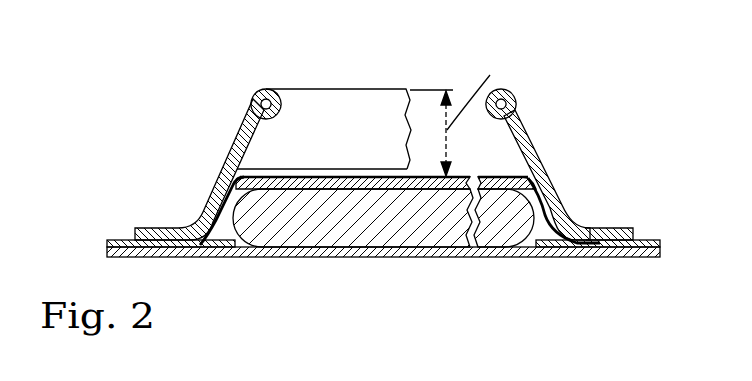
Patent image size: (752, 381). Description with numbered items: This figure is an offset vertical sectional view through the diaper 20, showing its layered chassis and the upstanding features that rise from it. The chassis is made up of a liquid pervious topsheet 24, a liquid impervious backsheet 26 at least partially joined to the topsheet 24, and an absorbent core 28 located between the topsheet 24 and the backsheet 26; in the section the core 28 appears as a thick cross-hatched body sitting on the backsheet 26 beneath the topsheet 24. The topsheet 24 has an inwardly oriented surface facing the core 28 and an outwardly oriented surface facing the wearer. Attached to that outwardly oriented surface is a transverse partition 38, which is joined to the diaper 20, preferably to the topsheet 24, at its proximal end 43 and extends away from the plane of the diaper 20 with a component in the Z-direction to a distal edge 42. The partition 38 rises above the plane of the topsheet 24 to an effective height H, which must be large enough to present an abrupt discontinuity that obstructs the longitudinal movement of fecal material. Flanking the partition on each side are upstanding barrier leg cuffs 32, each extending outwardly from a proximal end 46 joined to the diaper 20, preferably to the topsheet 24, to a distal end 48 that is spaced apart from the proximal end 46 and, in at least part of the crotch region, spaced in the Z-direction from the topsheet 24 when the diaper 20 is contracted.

The diaper 20 is at (408, 179).
The liquid pervious topsheet 24 is at (518, 177).
The liquid impervious backsheet 26 is at (360, 258).
The absorbent core 28 is at (447, 228).
The barrier leg cuff 32 is at (215, 189).
The transverse partition 38 is at (382, 110).
The distal edge 42 is at (315, 90).
The proximal end 43 is at (348, 170).
The proximal end 46 is at (578, 228).
The distal end 48 is at (497, 90).